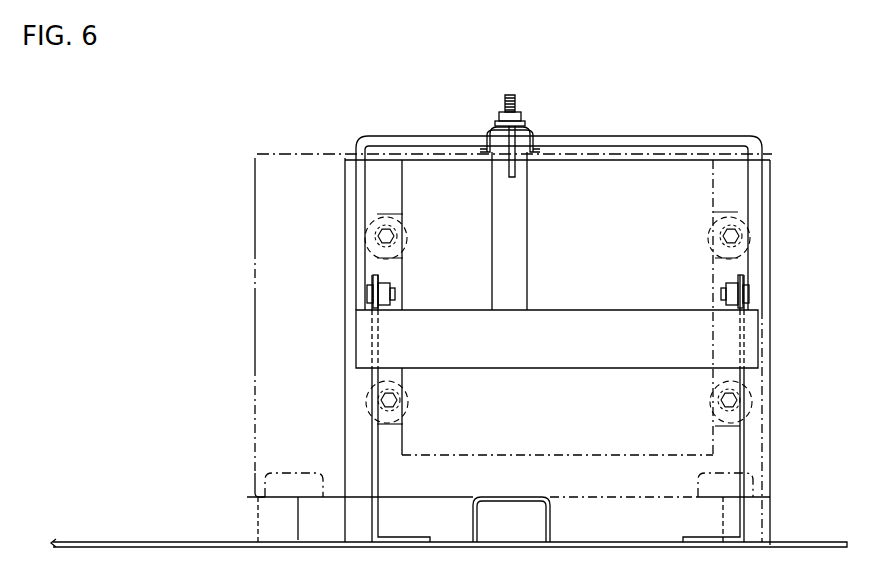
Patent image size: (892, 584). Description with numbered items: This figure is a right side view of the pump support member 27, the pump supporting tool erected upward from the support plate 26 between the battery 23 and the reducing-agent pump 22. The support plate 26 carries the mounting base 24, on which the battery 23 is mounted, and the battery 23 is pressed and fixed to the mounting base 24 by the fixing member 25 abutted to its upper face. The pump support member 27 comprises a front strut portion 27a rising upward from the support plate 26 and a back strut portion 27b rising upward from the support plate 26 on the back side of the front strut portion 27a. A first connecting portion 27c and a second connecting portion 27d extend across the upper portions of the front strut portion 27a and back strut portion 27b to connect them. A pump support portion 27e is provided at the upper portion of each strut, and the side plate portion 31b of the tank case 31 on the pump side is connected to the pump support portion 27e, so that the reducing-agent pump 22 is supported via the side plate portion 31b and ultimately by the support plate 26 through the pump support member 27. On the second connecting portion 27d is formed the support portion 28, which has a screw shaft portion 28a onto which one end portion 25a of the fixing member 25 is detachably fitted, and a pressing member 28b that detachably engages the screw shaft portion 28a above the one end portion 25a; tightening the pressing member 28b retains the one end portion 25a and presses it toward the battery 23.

The reducing-agent pump 22 is at (764, 182).
The battery 23 is at (256, 363).
The mounting base 24 is at (243, 516).
The fixing member 25 is at (556, 190).
The one end portion 25a is at (577, 94).
The support plate 26 is at (138, 541).
The pump support member 27 is at (359, 135).
The front strut portion 27a is at (745, 453).
The back strut portion 27b is at (368, 455).
The first connecting portion 27c is at (537, 357).
The second connecting portion 27d is at (681, 135).
The pump support portion 27e is at (375, 277).
The support portion 28 is at (475, 95).
The screw shaft portion 28a is at (493, 134).
The pressing member 28b is at (497, 107).
The tank case 31 is at (513, 131).
The side plate portion 31b is at (345, 186).